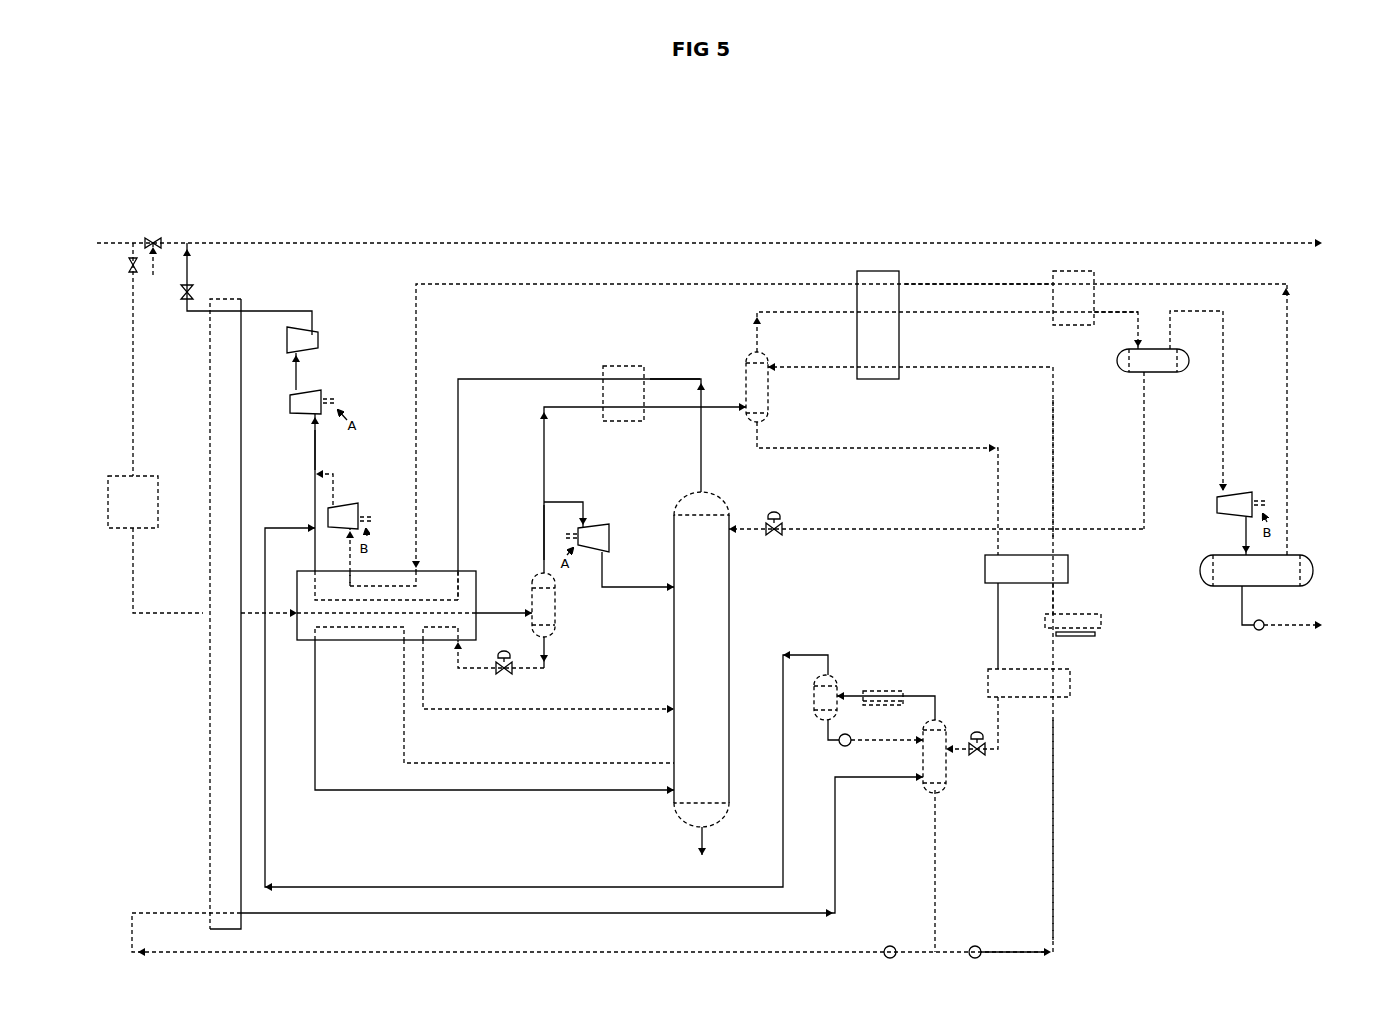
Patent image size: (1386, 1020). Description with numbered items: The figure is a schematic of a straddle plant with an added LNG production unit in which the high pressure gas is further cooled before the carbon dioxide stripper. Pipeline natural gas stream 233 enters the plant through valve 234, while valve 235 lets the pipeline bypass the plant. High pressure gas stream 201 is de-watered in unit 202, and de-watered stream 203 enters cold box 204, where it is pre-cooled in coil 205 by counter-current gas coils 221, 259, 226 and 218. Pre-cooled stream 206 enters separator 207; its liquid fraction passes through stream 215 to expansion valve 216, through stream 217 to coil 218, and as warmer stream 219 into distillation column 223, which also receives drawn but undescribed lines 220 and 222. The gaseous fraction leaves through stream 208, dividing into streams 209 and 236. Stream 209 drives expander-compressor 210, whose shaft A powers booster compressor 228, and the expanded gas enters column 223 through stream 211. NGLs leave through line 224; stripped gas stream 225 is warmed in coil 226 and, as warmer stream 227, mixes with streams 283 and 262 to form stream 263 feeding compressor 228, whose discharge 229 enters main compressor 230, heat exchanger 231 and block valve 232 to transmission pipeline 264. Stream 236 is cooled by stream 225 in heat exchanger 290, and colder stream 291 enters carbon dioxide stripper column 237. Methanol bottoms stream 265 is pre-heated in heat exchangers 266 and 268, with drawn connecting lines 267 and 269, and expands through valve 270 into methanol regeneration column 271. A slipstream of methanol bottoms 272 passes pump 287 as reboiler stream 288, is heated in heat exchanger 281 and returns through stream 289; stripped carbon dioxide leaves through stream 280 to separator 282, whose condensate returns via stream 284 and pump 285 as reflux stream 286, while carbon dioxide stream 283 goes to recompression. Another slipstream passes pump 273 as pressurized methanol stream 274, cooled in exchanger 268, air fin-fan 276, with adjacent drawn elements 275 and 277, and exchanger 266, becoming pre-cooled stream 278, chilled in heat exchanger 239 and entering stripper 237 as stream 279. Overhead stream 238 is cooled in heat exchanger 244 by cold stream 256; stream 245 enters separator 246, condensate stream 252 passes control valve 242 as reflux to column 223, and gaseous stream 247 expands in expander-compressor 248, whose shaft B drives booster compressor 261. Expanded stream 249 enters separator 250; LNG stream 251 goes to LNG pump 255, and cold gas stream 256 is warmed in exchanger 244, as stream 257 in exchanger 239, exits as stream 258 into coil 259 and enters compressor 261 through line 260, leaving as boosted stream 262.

The high pressure gas stream 201 is at (126, 438).
The pre-treatment unit 202 is at (115, 536).
The de-watered stream 203 is at (172, 621).
The cold box 204 is at (485, 594).
The coil 205 is at (308, 621).
The high pressure pre-cooled gas stream 206 is at (514, 620).
The separator 207 is at (558, 611).
The stream 208 is at (541, 521).
The stream 209 is at (576, 496).
The expander-compressor 210 is at (591, 556).
The stream 211 is at (635, 594).
The stream 215 is at (551, 649).
The expansion valve 216 is at (514, 677).
The stream 217 is at (480, 671).
The gas coil 218 is at (440, 633).
The stream 219 is at (546, 714).
The stream 220 is at (400, 688).
The gas coil 221 is at (355, 629).
The stream 222 is at (459, 793).
The distillation column 223 is at (670, 649).
The line 224 is at (696, 839).
The stream 225 is at (695, 458).
The gas coil 226 is at (437, 592).
The warmer gas stream 227 is at (310, 494).
The booster compressor 228 is at (292, 416).
The stream 229 is at (303, 380).
The main compressor 230 is at (323, 337).
The heat exchanger 231 is at (205, 413).
The straddle plant block valve 232 is at (197, 290).
The pressurized pipeline natural gas stream 233 is at (107, 251).
The valve 234 is at (125, 276).
The valve 235 is at (160, 270).
The high pressure gaseous stream 236 is at (538, 441).
The CO2 stripper column 237 is at (781, 403).
The overhead stream 238 is at (743, 328).
The heat exchanger 239 is at (847, 328).
The control valve 242 is at (777, 538).
The heat exchanger 244 is at (1045, 326).
The high pressure CO2 stripped gas stream 245 is at (1117, 316).
The separator 246 is at (1123, 379).
The gaseous stream 247 is at (1213, 398).
The expander-compressor 248 is at (1210, 507).
The expanded stream 249 is at (1240, 533).
The separator 250 is at (1195, 574).
The LNG stream 251 is at (1237, 614).
The condensate stream 252 is at (1136, 443).
The LNG pump 255 is at (1255, 637).
The cold gaseous stream 256 is at (1277, 333).
The warmer gaseous stream 257 is at (965, 280).
The stream 258 is at (750, 280).
The cold box coil 259 is at (392, 577).
The line 260 is at (347, 546).
The booster compressor 261 is at (362, 500).
The boosted pressure gaseous stream 262 is at (341, 472).
The mixed stream 263 is at (311, 443).
The transmission gas pipeline 264 is at (396, 251).
The high pressure bottoms stream 265 is at (834, 461).
The heat exchanger 266 is at (984, 586).
The stream 267 is at (991, 627).
The heat exchanger 268 is at (985, 678).
The stream 269 is at (994, 711).
The valve 270 is at (979, 763).
The methanol regeneration column 271 is at (953, 794).
The methanol bottoms stream 272 is at (927, 854).
The pump 273 is at (977, 943).
The pressurized methanol stream 274 is at (1063, 813).
The heat exchanger 275 is at (1064, 648).
The air fin-fan 276 is at (1109, 636).
The stream 277 is at (1061, 597).
The pre-cooled methanol stream 278 is at (1061, 483).
The chilled methanol stream 279 is at (809, 376).
The stream 280 is at (921, 689).
The heat exchanger 281 is at (879, 686).
The separator 282 is at (841, 679).
The stripped CO2 stream 283 is at (803, 648).
The stream 284 is at (819, 736).
The pump 285 is at (839, 750).
The reflux stream 286 is at (891, 741).
The pump 287 is at (886, 942).
The reboiler stream 288 is at (588, 947).
The stream 289 is at (830, 861).
The heat exchanger 290 is at (602, 427).
The colder stream 291 is at (675, 412).